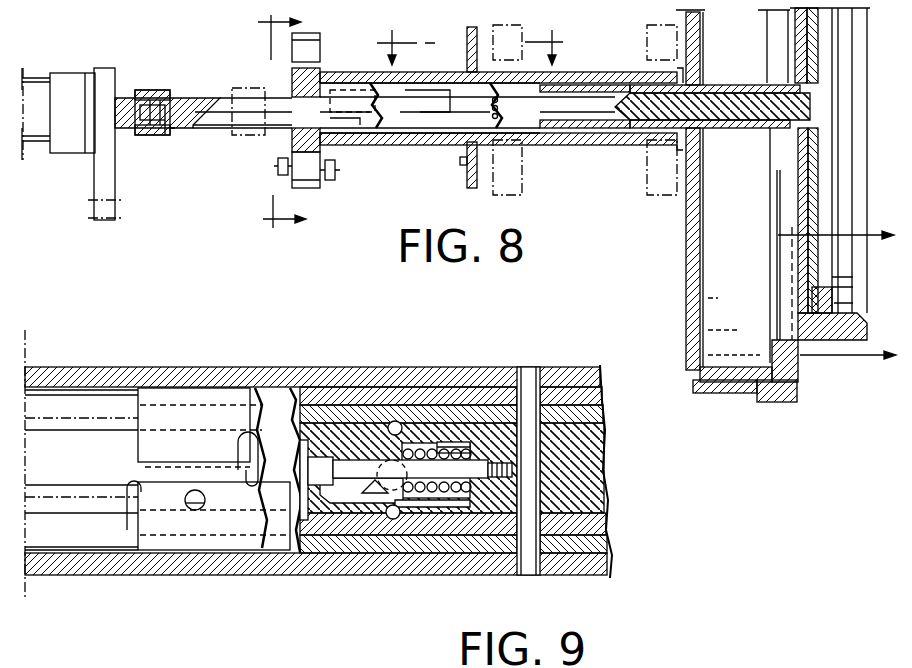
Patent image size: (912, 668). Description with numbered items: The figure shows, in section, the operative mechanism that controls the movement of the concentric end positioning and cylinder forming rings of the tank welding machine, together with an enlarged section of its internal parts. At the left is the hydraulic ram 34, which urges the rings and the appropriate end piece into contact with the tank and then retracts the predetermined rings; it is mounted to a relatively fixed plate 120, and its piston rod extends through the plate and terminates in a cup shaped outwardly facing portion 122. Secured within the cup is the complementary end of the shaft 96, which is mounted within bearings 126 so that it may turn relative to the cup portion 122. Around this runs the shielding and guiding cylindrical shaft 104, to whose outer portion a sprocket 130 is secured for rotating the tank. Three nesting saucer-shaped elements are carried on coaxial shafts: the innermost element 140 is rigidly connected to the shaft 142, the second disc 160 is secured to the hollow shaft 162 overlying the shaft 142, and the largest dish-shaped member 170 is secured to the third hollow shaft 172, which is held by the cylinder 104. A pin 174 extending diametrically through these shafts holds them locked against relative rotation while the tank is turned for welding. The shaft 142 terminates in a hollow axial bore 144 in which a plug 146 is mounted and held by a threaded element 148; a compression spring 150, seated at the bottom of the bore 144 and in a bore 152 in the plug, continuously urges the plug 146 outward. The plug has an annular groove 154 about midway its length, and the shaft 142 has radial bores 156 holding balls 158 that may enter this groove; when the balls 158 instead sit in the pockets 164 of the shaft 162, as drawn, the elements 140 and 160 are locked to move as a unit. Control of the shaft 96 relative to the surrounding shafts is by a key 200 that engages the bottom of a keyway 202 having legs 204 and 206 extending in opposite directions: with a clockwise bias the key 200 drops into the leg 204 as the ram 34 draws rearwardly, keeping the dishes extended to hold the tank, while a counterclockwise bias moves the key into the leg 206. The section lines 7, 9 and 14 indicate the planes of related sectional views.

In FIG. 8, the hydraulic ram 34 is at (67, 85).
In FIG. 8, the fixed plate 120 is at (108, 184).
In FIG. 8, the shaft 96 is at (190, 98).
In FIG. 9, the shaft 96 is at (96, 472).
In FIG. 8, the cup shaped portion 122 is at (148, 90).
In FIG. 8, the bearings 126 is at (170, 132).
In FIG. 8, the section line 7- 7 is at (279, 121).
In FIG. 8, the cylindrical shaft 104 is at (367, 70).
In FIG. 8, the shaft 142 is at (602, 103).
In FIG. 9, the shaft 142 is at (592, 463).
In FIG. 8, the sprocket 130 is at (466, 42).
In FIG. 8, the section line 9- 9 is at (474, 41).
In FIG. 8, the third coaxial hollow shaft 172 is at (597, 132).
In FIG. 8, the hollow shaft 162 is at (722, 84).
In FIG. 9, the hollow shaft 162 is at (592, 409).
In FIG. 8, the third dish-shaped member 170 is at (695, 242).
In FIG. 8, the second disc 160 is at (803, 22).
In FIG. 8, the innermost element 140 is at (815, 183).
In FIG. 8, the section line 14- 14 is at (839, 295).
In FIG. 9, the pin 174 is at (528, 380).
In FIG. 9, the leg 206 is at (240, 447).
In FIG. 9, the leg 204 is at (206, 497).
In FIG. 9, the keyway 202 is at (127, 530).
In FIG. 9, the key 200 is at (200, 503).
In FIG. 9, the hollow axial bore 144 is at (322, 497).
In FIG. 9, the bore 152 is at (415, 445).
In FIG. 9, the compression spring 150 is at (455, 444).
In FIG. 9, the plug 146 is at (345, 492).
In FIG. 9, the annular groove 154 is at (372, 496).
In FIG. 9, the radial bores 156 is at (415, 507).
In FIG. 9, the threaded element 148 is at (325, 457).
In FIG. 9, the balls 158 is at (395, 421).
In FIG. 9, the pockets 164 is at (395, 519).